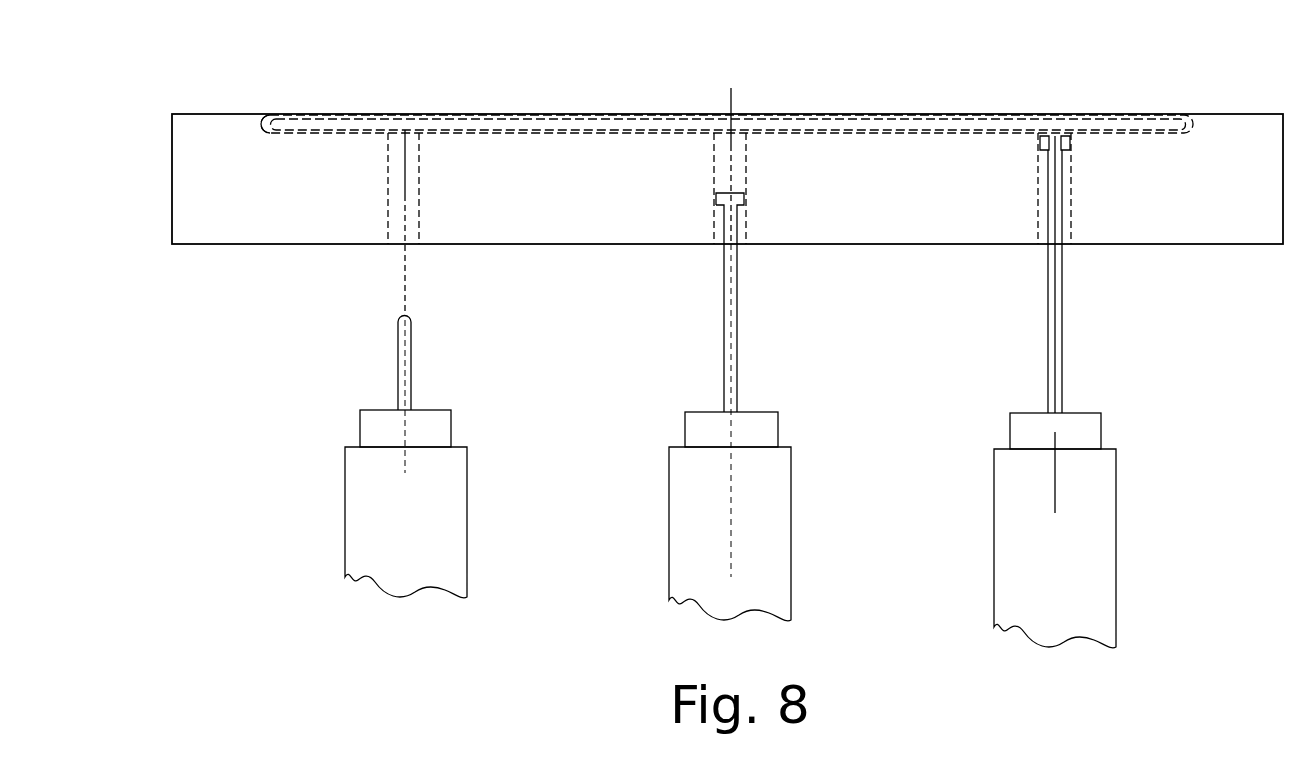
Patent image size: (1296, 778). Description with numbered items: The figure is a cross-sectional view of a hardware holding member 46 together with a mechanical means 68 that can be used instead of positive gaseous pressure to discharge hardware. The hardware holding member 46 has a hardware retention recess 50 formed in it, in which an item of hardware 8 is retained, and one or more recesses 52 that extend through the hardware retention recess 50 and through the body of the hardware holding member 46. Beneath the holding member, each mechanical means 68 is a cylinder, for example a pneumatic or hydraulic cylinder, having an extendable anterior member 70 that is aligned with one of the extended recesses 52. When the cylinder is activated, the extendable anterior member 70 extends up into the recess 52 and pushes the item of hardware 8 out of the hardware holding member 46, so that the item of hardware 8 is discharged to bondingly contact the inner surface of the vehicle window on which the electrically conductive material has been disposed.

The hardware holding member 46 is at (240, 118).
The hardware retention recess 50 is at (268, 118).
The item of hardware 8 is at (321, 122).
The recess extending through the hardware retention recess 52 is at (412, 132).
The extendable anterior member 70 is at (412, 355).
The mechanical means 68 is at (345, 525).